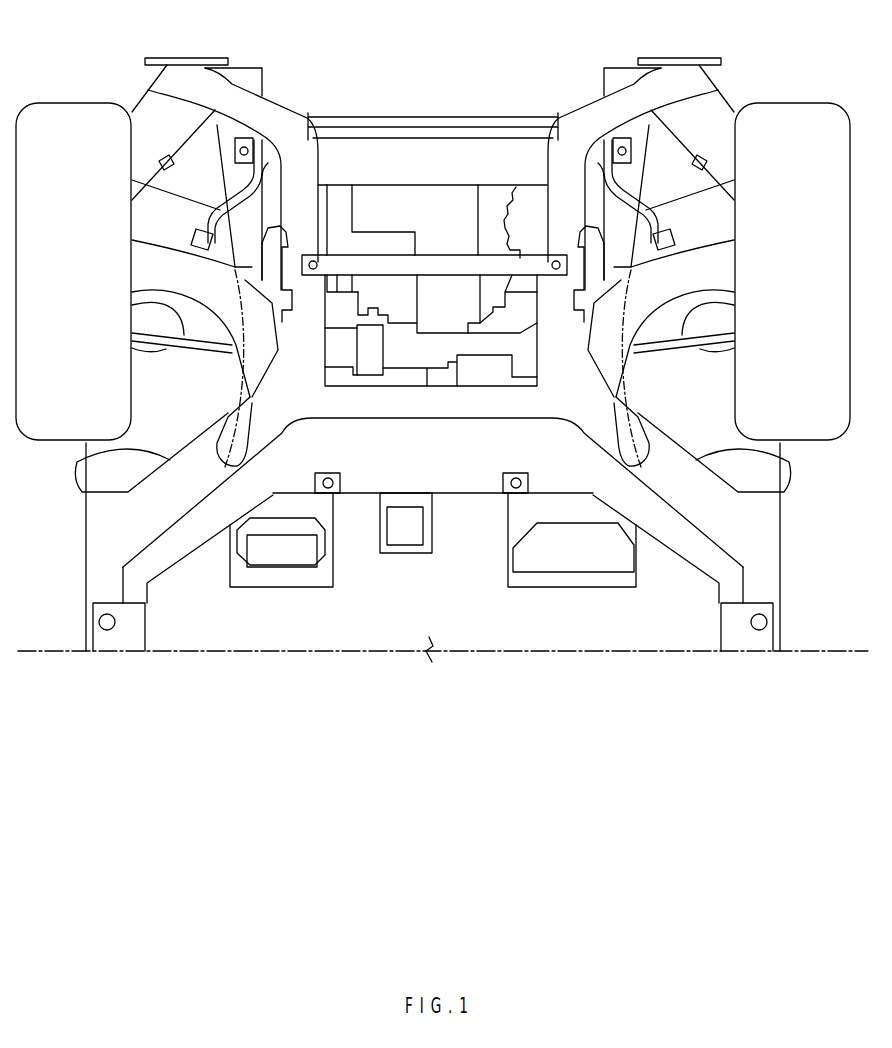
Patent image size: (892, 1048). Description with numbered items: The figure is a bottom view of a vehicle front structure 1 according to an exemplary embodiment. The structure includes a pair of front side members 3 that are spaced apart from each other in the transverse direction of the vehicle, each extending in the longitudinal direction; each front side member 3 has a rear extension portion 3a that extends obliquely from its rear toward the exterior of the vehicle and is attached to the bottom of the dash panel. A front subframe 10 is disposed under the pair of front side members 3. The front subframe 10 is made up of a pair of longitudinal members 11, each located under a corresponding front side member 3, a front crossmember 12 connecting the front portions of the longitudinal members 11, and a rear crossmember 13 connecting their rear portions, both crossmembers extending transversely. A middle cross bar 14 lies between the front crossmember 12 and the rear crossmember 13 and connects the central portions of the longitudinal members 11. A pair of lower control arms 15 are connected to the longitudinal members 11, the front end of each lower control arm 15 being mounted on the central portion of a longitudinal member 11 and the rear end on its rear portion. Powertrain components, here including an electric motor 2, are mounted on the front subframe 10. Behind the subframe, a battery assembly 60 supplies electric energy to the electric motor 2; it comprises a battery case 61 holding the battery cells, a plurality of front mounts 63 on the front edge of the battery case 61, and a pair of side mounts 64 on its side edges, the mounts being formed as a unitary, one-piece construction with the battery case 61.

The vehicle front structure 1 is at (430, 101).
The electric motor 2 is at (488, 230).
The front side member 3 is at (232, 181).
The rear extension portion 3a is at (77, 463).
The front subframe 10 is at (502, 130).
The longitudinal member 11 is at (289, 192).
The front crossmember 12 is at (458, 153).
The rear crossmember 13 is at (397, 404).
The middle cross bar 14 is at (385, 262).
The lower control arm 15 is at (193, 290).
The battery assembly 60 is at (318, 666).
The battery case 61 is at (397, 630).
The front mount 63 is at (332, 472).
The side mount 64 is at (100, 636).